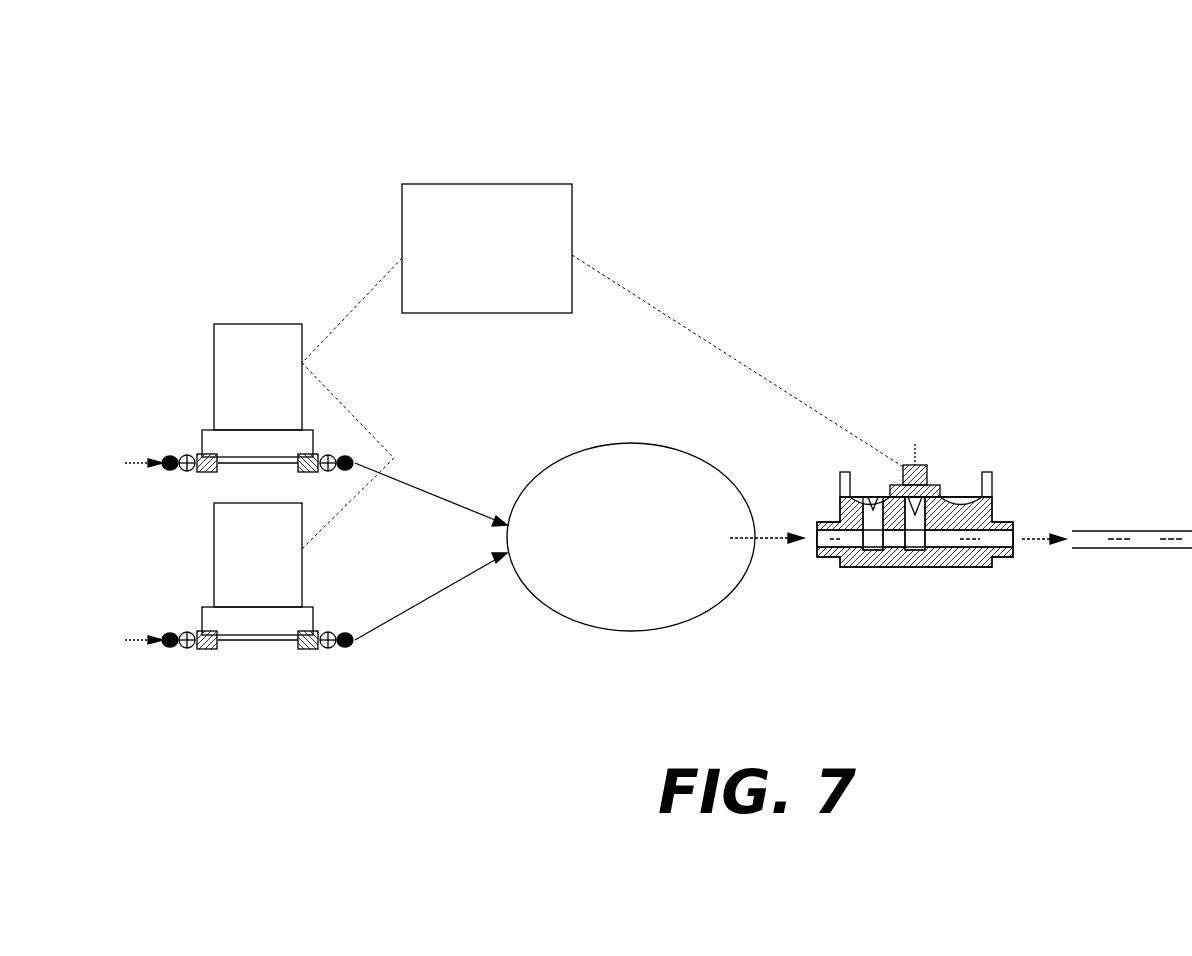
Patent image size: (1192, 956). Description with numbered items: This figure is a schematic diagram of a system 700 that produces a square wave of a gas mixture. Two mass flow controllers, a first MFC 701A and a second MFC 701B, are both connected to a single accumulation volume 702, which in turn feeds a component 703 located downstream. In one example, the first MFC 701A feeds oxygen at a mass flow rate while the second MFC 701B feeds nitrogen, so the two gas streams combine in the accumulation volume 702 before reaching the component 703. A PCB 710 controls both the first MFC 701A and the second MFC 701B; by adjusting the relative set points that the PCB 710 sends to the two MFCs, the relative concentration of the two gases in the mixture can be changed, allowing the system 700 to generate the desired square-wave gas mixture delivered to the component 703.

The gas mixing and delivery system 700 is at (658, 344).
The first MFC 701A is at (316, 425).
The second MFC 701B is at (316, 576).
The accumulation volume 702 is at (655, 537).
The component 703 is at (941, 524).
The PCB 710 is at (603, 366).